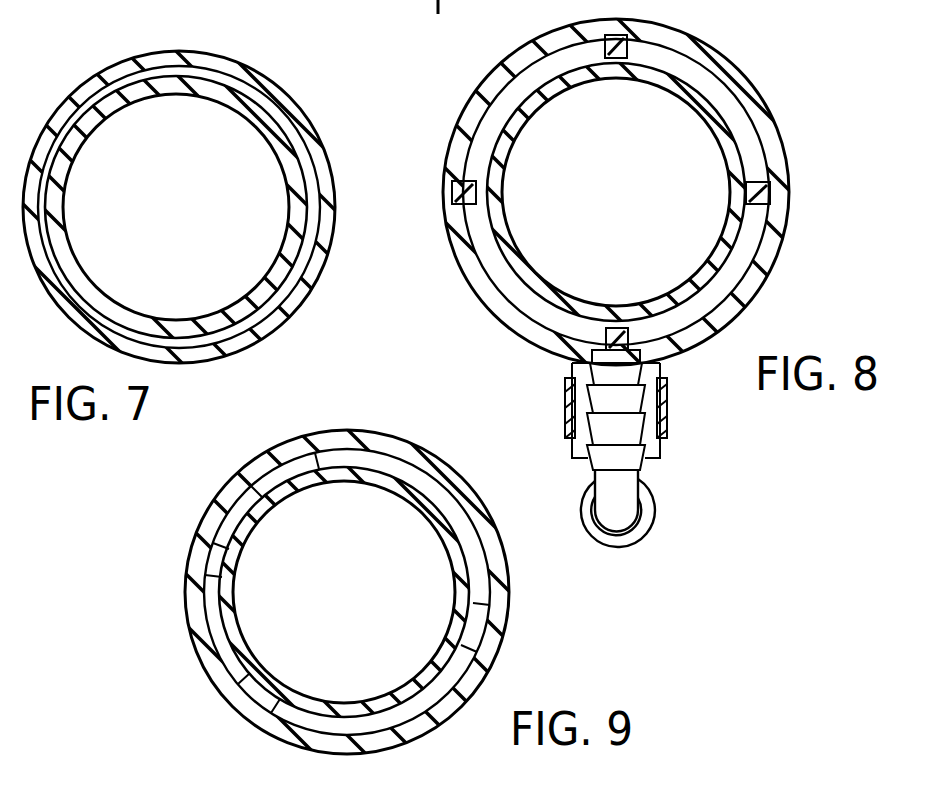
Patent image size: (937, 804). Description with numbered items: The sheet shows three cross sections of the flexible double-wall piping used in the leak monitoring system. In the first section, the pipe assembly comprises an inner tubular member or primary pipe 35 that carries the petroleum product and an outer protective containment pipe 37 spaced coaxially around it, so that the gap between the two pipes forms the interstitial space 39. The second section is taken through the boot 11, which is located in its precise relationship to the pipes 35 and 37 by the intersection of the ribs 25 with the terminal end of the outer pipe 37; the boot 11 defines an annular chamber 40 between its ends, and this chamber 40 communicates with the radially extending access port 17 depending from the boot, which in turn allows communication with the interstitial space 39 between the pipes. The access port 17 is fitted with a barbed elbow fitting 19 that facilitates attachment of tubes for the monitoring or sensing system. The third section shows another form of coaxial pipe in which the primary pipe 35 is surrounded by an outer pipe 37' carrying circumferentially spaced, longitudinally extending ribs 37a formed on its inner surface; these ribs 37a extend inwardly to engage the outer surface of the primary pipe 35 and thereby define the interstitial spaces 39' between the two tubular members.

In FIG. 8, the boot 11 is at (770, 120).
In FIG. 8, the access port 17 is at (658, 453).
In FIG. 8, the elbow fitting 19 is at (623, 508).
In FIG. 8, the ribs 25 is at (487, 273).
In FIG. 7, the primary pipe 35 is at (258, 130).
In FIG. 8, the primary pipe 35 is at (707, 120).
In FIG. 9, the primary pipe 35 is at (437, 512).
In FIG. 7, the outer pipe 37 is at (202, 216).
In FIG. 9, the outer pipe 37' is at (352, 581).
In FIG. 9, the ribs 37a is at (190, 572).
In FIG. 7, the interstitial space 39 is at (176, 207).
In FIG. 9, the interstitial spaces 39' is at (344, 548).
In FIG. 8, the annular chamber 40 is at (487, 138).